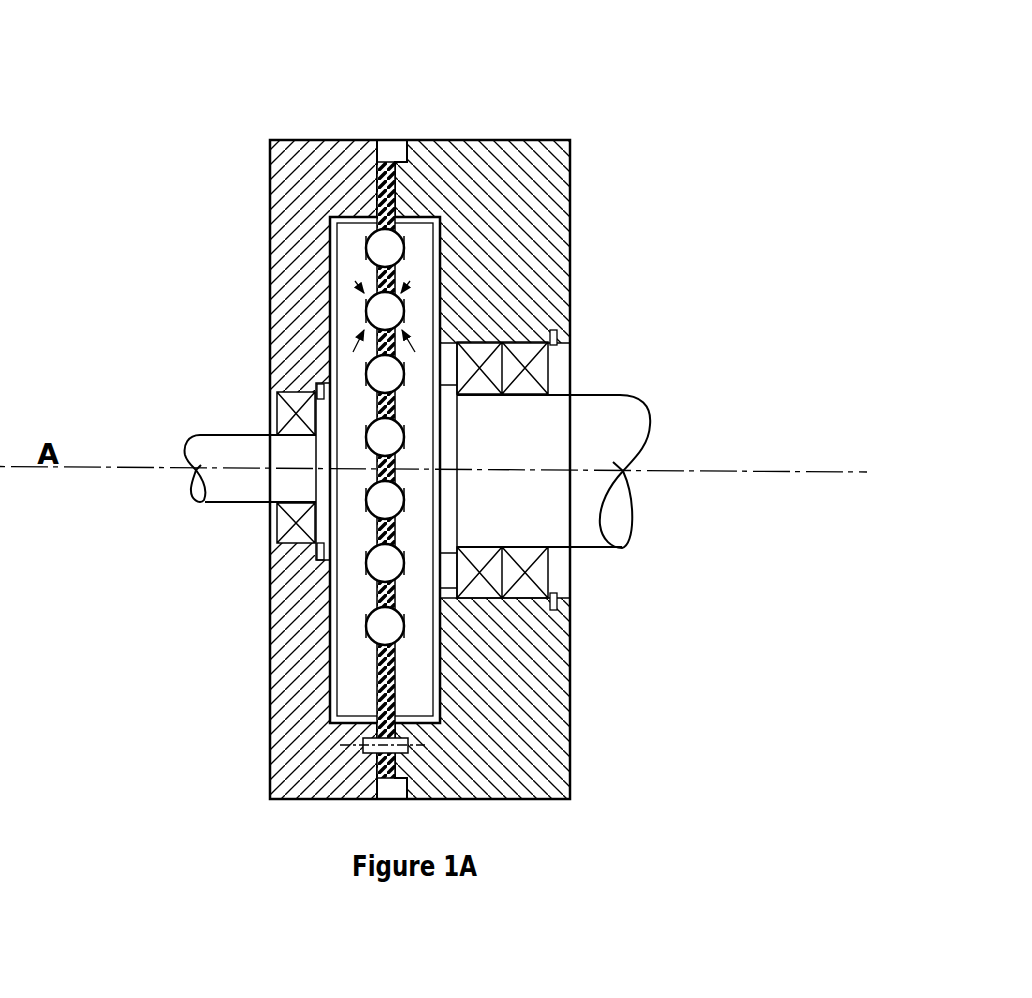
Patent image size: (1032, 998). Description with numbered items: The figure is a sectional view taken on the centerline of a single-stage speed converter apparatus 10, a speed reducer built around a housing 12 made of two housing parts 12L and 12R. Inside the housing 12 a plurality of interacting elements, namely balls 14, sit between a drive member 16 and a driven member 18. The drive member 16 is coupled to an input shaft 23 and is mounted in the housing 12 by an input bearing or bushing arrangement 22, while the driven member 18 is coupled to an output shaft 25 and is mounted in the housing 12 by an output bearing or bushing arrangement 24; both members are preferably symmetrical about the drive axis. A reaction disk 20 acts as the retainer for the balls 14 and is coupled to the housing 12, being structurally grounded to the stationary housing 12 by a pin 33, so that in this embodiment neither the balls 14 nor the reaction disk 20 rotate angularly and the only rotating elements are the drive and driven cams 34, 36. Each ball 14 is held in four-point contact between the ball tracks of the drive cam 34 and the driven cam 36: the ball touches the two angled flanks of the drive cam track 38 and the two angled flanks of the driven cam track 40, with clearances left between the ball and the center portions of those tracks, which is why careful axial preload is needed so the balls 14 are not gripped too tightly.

The single-stage speed converter apparatus 10 is at (322, 103).
The housing 12 is at (497, 103).
The left housing part 12L is at (267, 228).
The right housing part 12R is at (577, 288).
The balls 14 is at (403, 245).
The drive member 16 is at (345, 598).
The driven member 18 is at (418, 598).
The reaction disk 20 is at (370, 182).
The input bearing or bushing arrangement 22 is at (270, 528).
The input shaft 23 is at (225, 432).
The output bearing or bushing arrangement 24 is at (553, 362).
The output shaft 25 is at (625, 540).
The pin 33 is at (408, 752).
The drive cam 34 is at (350, 235).
The driven cam 36 is at (419, 253).
The drive cam track 38 is at (363, 302).
The driven cam track 40 is at (407, 302).